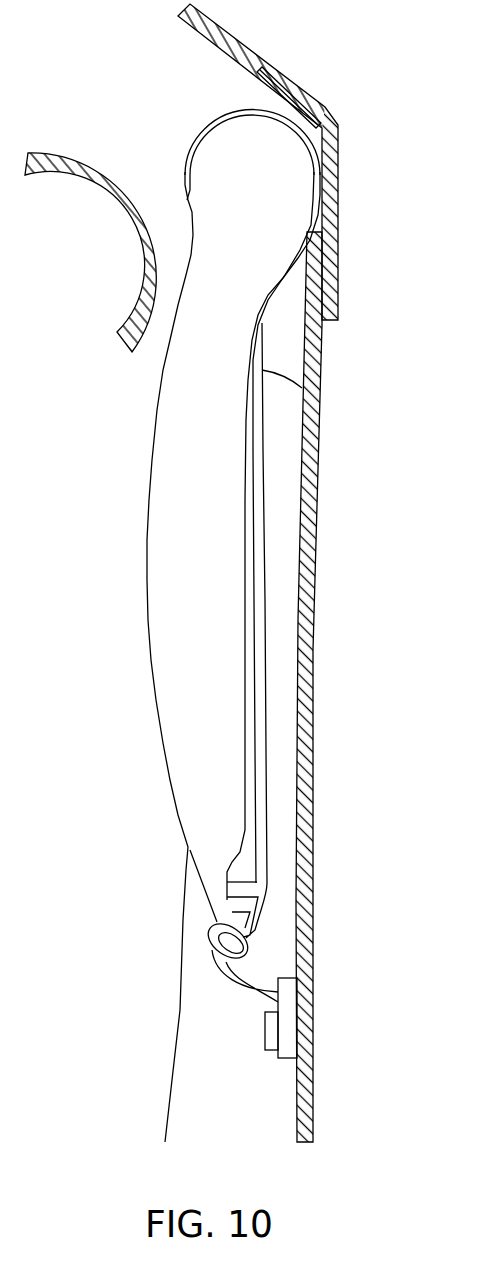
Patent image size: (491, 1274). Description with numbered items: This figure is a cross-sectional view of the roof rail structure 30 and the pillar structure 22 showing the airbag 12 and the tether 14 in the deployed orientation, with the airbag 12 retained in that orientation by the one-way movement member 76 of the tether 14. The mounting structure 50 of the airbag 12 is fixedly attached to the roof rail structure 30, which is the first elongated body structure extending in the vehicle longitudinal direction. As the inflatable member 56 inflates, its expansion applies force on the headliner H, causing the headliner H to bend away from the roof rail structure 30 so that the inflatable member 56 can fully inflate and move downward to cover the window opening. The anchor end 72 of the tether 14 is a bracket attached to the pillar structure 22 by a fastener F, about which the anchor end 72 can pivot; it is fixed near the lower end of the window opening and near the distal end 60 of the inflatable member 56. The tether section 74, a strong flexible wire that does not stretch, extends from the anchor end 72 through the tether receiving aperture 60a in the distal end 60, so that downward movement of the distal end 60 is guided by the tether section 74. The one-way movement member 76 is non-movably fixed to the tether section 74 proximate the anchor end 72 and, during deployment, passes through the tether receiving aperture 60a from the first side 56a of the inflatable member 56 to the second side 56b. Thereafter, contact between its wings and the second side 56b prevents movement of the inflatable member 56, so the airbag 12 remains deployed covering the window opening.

The roof rail structure 30 is at (290, 76).
The mounting structure 50 is at (260, 76).
The airbag 12 is at (194, 128).
The headliner H is at (118, 213).
The inflatable member 56 is at (200, 472).
The tether 14 is at (270, 528).
The tether section 74 is at (262, 673).
The pillar structure 22 is at (303, 785).
The second side 56b is at (257, 881).
The one-way movement member 76 is at (252, 923).
The distal end 60 is at (237, 950).
The tether receiving aperture 60a is at (232, 912).
The first side 56a is at (228, 953).
The fastener F is at (270, 1028).
The anchor end 72 is at (288, 1058).